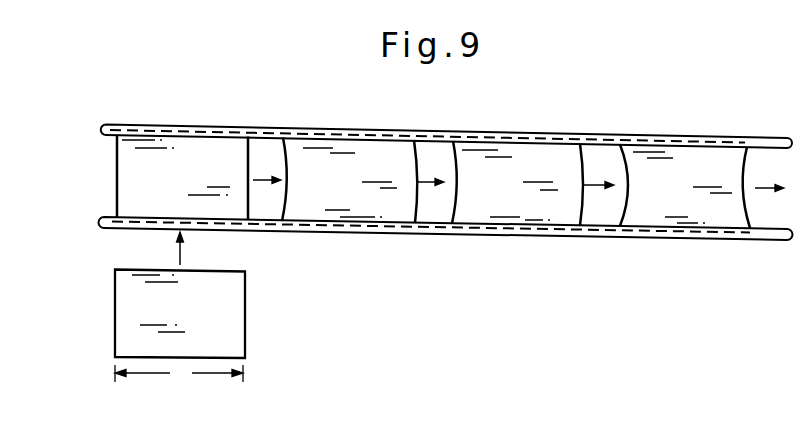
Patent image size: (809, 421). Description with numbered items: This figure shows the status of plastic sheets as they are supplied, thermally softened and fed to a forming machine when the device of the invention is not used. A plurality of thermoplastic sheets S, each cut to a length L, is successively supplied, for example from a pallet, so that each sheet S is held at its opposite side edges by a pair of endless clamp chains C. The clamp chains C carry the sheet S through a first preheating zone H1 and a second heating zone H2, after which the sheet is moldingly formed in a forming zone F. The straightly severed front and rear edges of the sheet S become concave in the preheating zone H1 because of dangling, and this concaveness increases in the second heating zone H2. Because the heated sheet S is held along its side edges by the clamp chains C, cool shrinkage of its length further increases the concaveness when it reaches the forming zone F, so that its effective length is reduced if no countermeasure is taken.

The thermoplastic sheet S is at (252, 150).
The first preheating zone H1 is at (349, 157).
The endless clamp chains C is at (431, 136).
The second heating zone H2 is at (517, 158).
The forming zone F is at (685, 161).
The length L is at (179, 374).